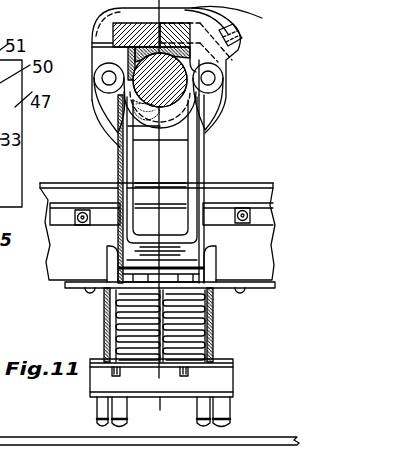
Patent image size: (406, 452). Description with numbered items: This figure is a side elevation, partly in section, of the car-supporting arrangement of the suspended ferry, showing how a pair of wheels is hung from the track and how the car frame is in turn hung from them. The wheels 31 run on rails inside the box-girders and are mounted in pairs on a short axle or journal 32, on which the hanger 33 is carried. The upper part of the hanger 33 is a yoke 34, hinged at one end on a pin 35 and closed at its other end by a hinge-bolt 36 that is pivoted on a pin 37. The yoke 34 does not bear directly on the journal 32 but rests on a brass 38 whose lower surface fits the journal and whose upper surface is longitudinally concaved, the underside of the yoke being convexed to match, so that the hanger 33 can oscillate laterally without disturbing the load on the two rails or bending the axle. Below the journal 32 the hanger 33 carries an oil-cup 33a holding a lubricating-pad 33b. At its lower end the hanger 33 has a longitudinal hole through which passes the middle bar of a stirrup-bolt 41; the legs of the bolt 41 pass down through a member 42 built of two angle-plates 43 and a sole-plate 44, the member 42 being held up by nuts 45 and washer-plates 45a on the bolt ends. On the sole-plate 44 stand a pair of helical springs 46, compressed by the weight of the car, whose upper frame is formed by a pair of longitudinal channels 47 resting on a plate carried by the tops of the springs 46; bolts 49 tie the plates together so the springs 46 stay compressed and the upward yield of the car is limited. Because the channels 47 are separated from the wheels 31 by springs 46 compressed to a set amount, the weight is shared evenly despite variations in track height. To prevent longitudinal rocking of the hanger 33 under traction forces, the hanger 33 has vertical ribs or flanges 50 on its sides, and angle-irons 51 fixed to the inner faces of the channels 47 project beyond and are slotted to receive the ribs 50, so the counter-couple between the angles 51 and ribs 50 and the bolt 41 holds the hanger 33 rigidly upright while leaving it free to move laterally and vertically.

The wheels 31 is at (108, 112).
The axle or journal 32 is at (113, 44).
The hanger 33 is at (200, 158).
The oil-cup 33a is at (144, 135).
The lubricating-pad 33b is at (156, 106).
The yoke 34 is at (108, 26).
The pin 35 is at (110, 80).
The hinge-bolt 36 is at (238, 33).
The pin 37 is at (210, 86).
The brass 38 is at (228, 21).
The stirrup-bolt 41 is at (107, 268).
The member 42 is at (90, 380).
The angle-plates 43 is at (247, 376).
The sole-plate 44 is at (233, 362).
The nuts 45 is at (129, 418).
The washer-plates 45a is at (181, 410).
The helical springs 46 is at (214, 315).
The longitudinal channels 47 is at (157, 231).
The bolts 49 is at (120, 338).
The vertical ribs or flanges 50 is at (122, 176).
The angle-irons 51 is at (220, 205).